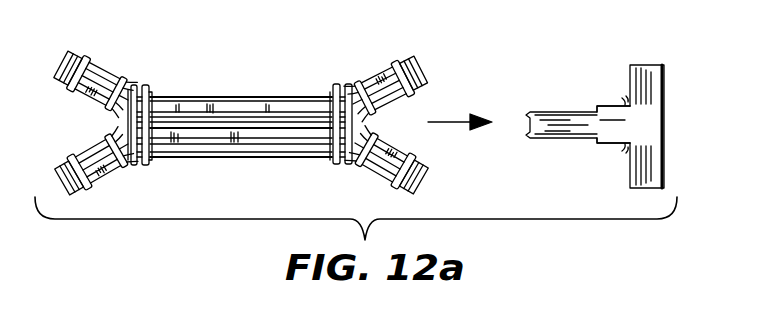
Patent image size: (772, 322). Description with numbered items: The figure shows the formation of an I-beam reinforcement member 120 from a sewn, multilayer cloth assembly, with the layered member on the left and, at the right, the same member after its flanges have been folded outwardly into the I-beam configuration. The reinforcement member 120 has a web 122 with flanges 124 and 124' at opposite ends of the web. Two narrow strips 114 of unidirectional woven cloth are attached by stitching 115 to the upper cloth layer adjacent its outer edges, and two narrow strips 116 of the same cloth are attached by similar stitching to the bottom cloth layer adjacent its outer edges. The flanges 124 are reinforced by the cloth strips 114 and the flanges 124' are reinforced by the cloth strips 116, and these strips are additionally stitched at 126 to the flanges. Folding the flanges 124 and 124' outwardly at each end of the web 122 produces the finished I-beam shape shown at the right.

The narrow strips of 0° woven cloth 114 is at (100, 62).
The stitching 115 is at (136, 85).
The narrow strips of 0° woven cloth 116 is at (105, 178).
The I-beam reinforcement member 120 is at (367, 113).
The web 122 is at (245, 94).
The flanges 124 is at (385, 99).
The flanges 124' is at (367, 168).
The stitching 126 is at (70, 97).